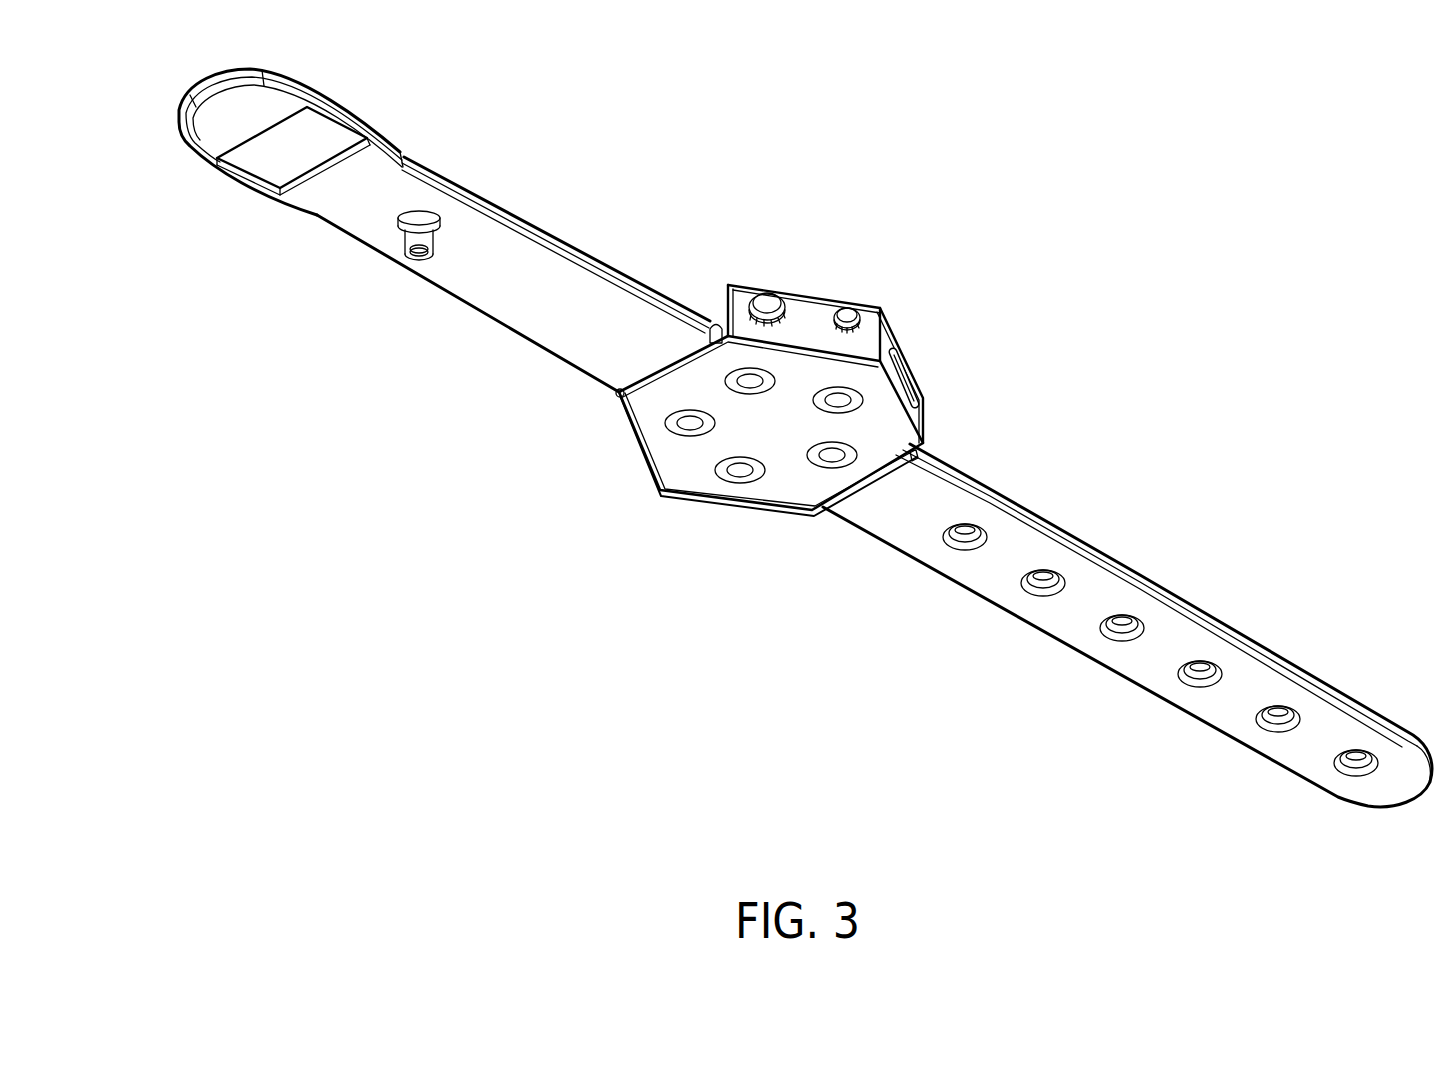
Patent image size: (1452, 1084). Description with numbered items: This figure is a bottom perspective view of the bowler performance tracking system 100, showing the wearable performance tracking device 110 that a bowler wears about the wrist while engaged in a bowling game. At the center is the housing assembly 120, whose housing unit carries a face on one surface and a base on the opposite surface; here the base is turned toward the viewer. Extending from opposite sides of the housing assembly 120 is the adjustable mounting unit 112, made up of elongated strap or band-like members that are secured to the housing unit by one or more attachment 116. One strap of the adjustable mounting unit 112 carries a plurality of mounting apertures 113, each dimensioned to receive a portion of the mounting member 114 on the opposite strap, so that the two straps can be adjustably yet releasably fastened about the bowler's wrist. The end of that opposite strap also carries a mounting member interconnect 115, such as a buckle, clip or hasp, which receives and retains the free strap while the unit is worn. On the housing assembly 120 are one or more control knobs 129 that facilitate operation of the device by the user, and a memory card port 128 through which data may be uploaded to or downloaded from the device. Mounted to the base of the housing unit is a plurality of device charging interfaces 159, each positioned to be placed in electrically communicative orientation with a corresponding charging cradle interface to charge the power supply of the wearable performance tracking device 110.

The bowler performance tracking system 100 is at (968, 146).
The wearable performance tracking device 110 is at (692, 270).
The adjustable mounting unit 112 is at (499, 205).
The mounting aperture 113 is at (1040, 592).
The mounting member 114 is at (405, 261).
The mounting member interconnect 115 is at (225, 178).
The attachment 116 is at (620, 398).
The housing assembly 120 is at (972, 404).
The memory card port 128 is at (907, 378).
The control knob 129 is at (845, 310).
The device charging interfaces 159 is at (810, 458).